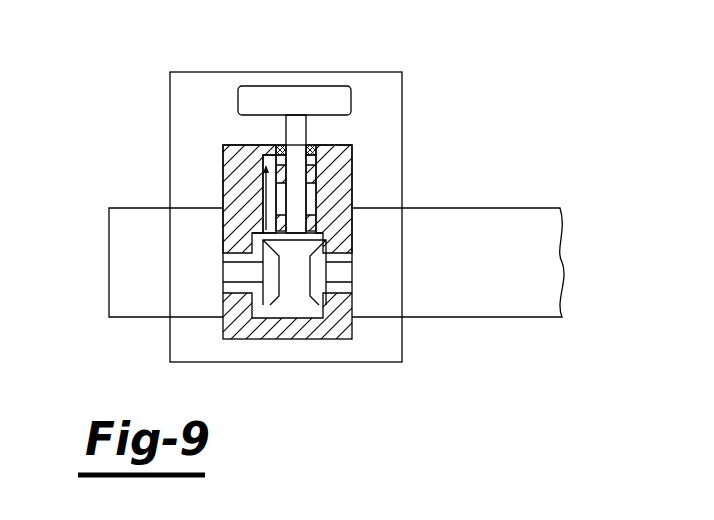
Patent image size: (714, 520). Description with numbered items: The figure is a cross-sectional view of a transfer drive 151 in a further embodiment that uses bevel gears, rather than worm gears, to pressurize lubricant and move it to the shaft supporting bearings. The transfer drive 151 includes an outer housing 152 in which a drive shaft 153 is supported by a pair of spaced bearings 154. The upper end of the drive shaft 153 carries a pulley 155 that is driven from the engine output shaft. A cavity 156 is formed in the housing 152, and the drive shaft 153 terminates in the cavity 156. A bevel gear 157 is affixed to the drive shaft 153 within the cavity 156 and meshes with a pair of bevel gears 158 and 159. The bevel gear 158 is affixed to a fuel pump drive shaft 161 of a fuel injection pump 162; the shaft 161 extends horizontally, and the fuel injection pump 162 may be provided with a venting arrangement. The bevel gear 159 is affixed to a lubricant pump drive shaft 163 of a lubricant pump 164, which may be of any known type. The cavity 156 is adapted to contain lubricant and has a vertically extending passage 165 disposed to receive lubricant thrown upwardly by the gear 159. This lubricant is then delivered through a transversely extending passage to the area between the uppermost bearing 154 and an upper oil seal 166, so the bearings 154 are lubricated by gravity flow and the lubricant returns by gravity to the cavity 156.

The transfer drive 151 is at (190, 97).
The outer housing 152 is at (352, 158).
The drive shaft 153 is at (302, 130).
The bearings 154 is at (320, 210).
The pulley 155 is at (298, 86).
The cavity 156 is at (226, 339).
The bevel gear 157 is at (297, 252).
The bevel gear 158 is at (314, 298).
The bevel gear 159 is at (256, 312).
The fuel pump drive shaft 161 is at (343, 272).
The fuel injection pump 162 is at (552, 255).
The lubricant pump drive shaft 163 is at (228, 275).
The lubricant pump 164 is at (127, 253).
The vertically extending passage 165 is at (265, 183).
The upper oil seal 166 is at (284, 146).